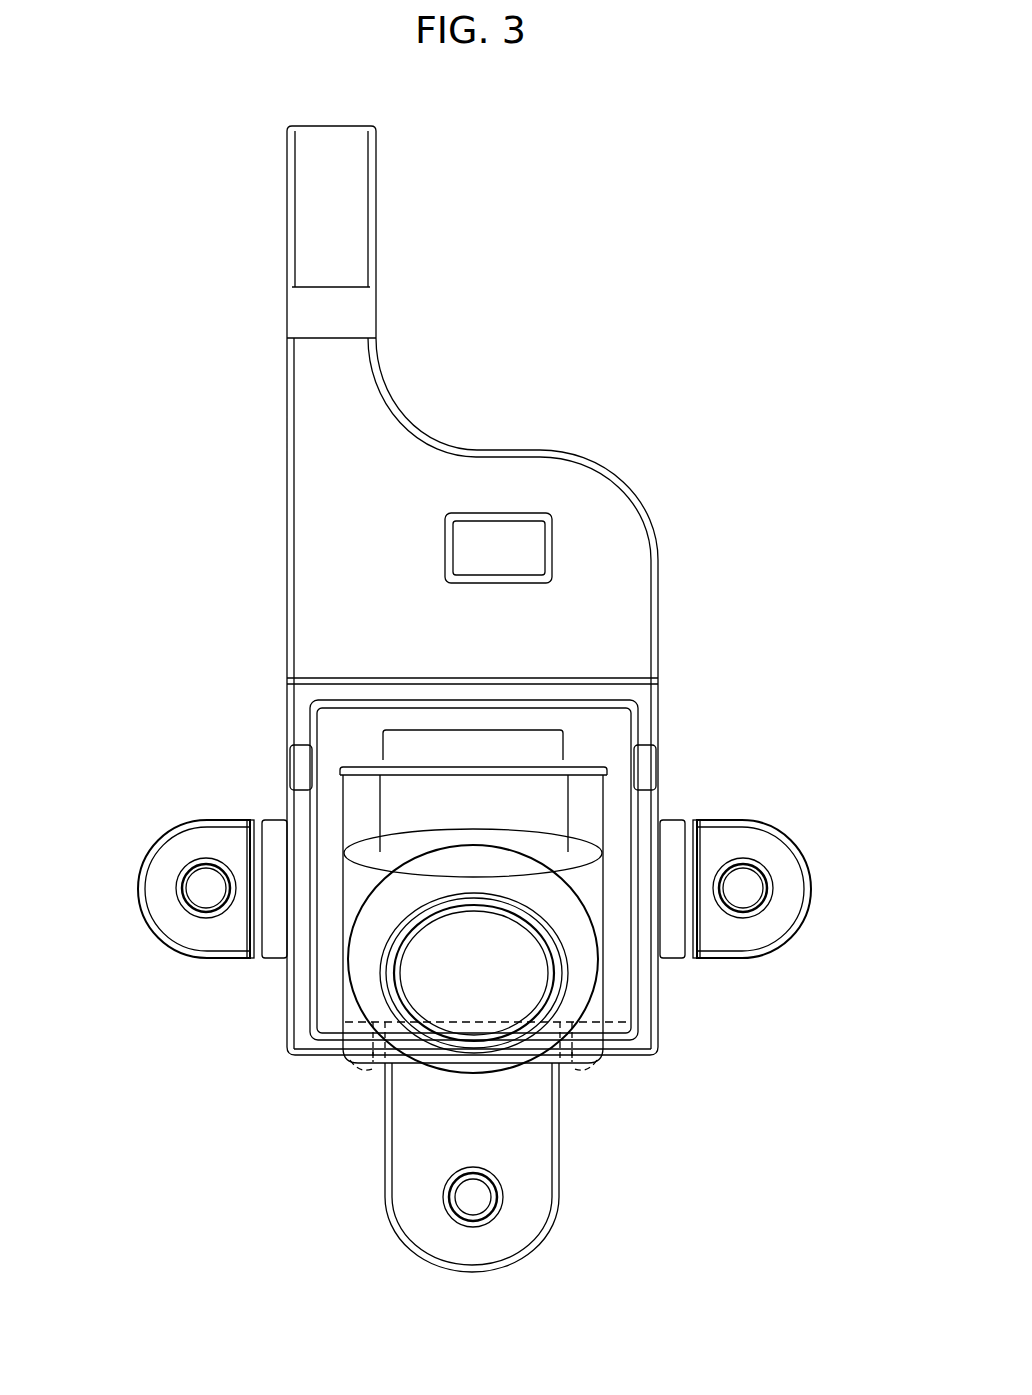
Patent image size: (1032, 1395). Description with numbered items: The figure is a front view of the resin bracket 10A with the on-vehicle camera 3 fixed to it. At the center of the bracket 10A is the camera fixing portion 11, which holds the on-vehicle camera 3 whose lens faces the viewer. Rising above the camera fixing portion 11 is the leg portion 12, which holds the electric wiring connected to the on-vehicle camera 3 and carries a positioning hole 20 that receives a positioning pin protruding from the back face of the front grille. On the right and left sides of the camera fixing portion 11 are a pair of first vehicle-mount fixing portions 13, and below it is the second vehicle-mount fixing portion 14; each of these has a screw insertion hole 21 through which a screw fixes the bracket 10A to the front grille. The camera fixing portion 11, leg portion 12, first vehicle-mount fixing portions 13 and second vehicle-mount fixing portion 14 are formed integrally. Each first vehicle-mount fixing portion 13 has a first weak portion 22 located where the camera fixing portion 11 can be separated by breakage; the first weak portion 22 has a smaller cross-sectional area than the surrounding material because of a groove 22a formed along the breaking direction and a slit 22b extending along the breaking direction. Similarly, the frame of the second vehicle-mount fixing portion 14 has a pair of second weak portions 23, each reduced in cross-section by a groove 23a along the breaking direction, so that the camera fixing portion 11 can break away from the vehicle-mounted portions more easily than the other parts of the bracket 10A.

The bracket 10A is at (255, 225).
The leg portion 12 is at (618, 553).
The positioning hole 20 is at (508, 528).
The camera fixing portion 11 is at (616, 775).
The on-vehicle camera 3 is at (372, 988).
The first vehicle-mount fixing portion 13 is at (160, 883).
The screw insertion hole 21 is at (200, 876).
The first weak portion 22 is at (477, 929).
The groove 22a is at (256, 935).
The slit 22b is at (258, 862).
The second vehicle-mount fixing portion 14 is at (540, 1178).
The second weak portion 23 is at (362, 1068).
The groove 23a is at (385, 1062).